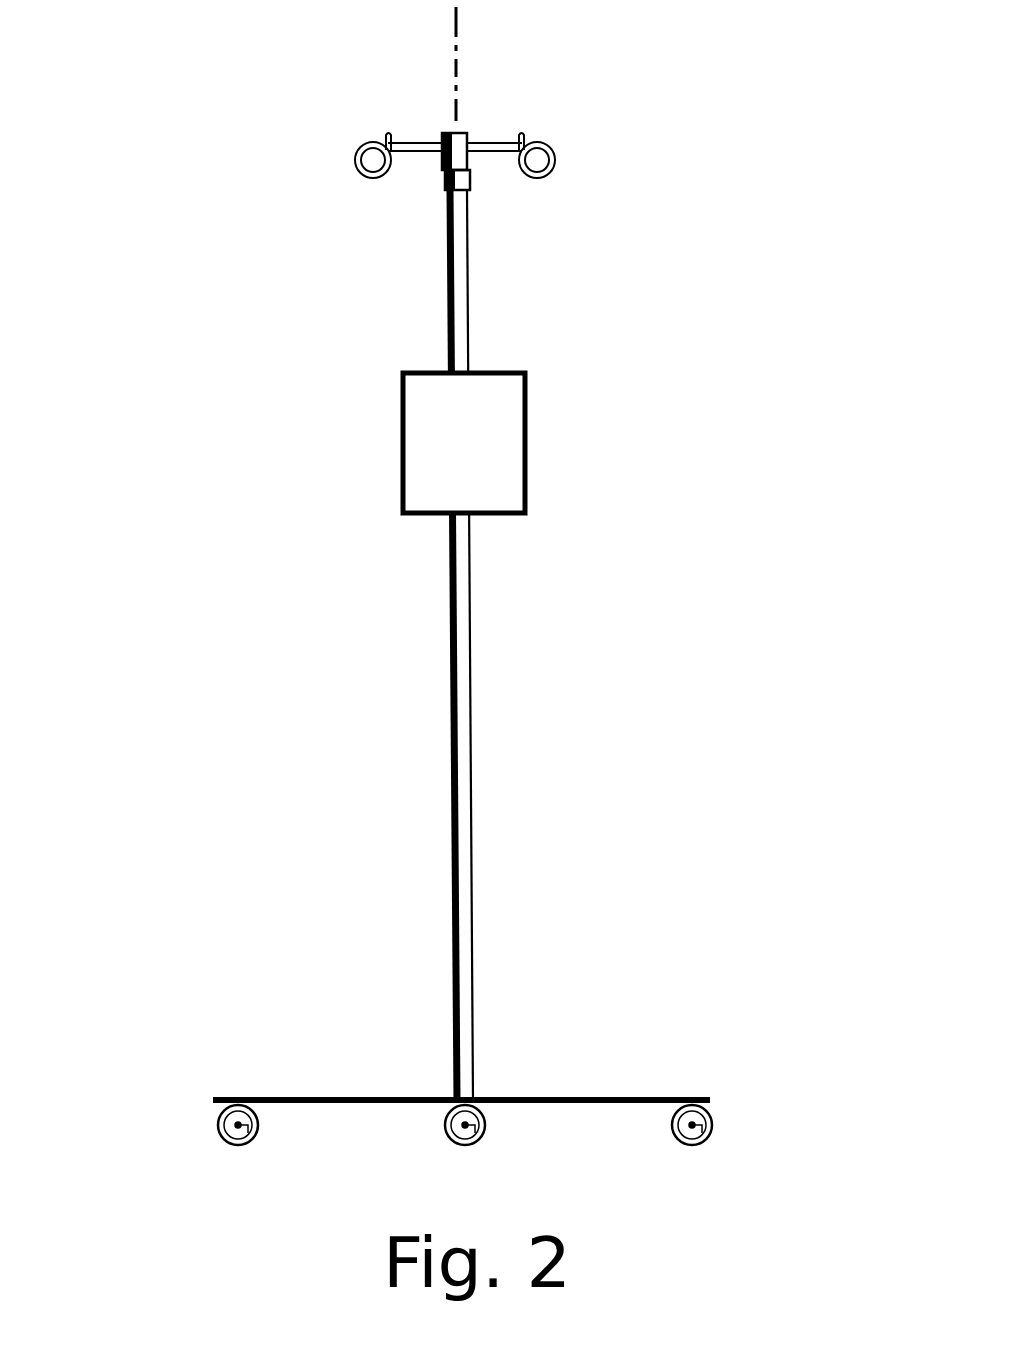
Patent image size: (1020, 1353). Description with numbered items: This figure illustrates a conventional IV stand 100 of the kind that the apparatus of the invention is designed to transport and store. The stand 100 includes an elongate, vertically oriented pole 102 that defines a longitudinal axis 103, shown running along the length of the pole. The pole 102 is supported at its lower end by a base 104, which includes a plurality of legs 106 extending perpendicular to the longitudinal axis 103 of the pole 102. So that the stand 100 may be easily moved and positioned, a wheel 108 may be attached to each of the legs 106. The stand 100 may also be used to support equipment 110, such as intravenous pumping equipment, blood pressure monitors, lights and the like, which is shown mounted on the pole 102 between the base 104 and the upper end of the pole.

The IV stand 100 is at (236, 258).
The pole 102 is at (473, 789).
The longitudinal axis 103 is at (457, 18).
The base 104 is at (180, 1078).
The legs 106 is at (346, 1100).
The wheel 108 is at (239, 1146).
The equipment 110 is at (525, 440).